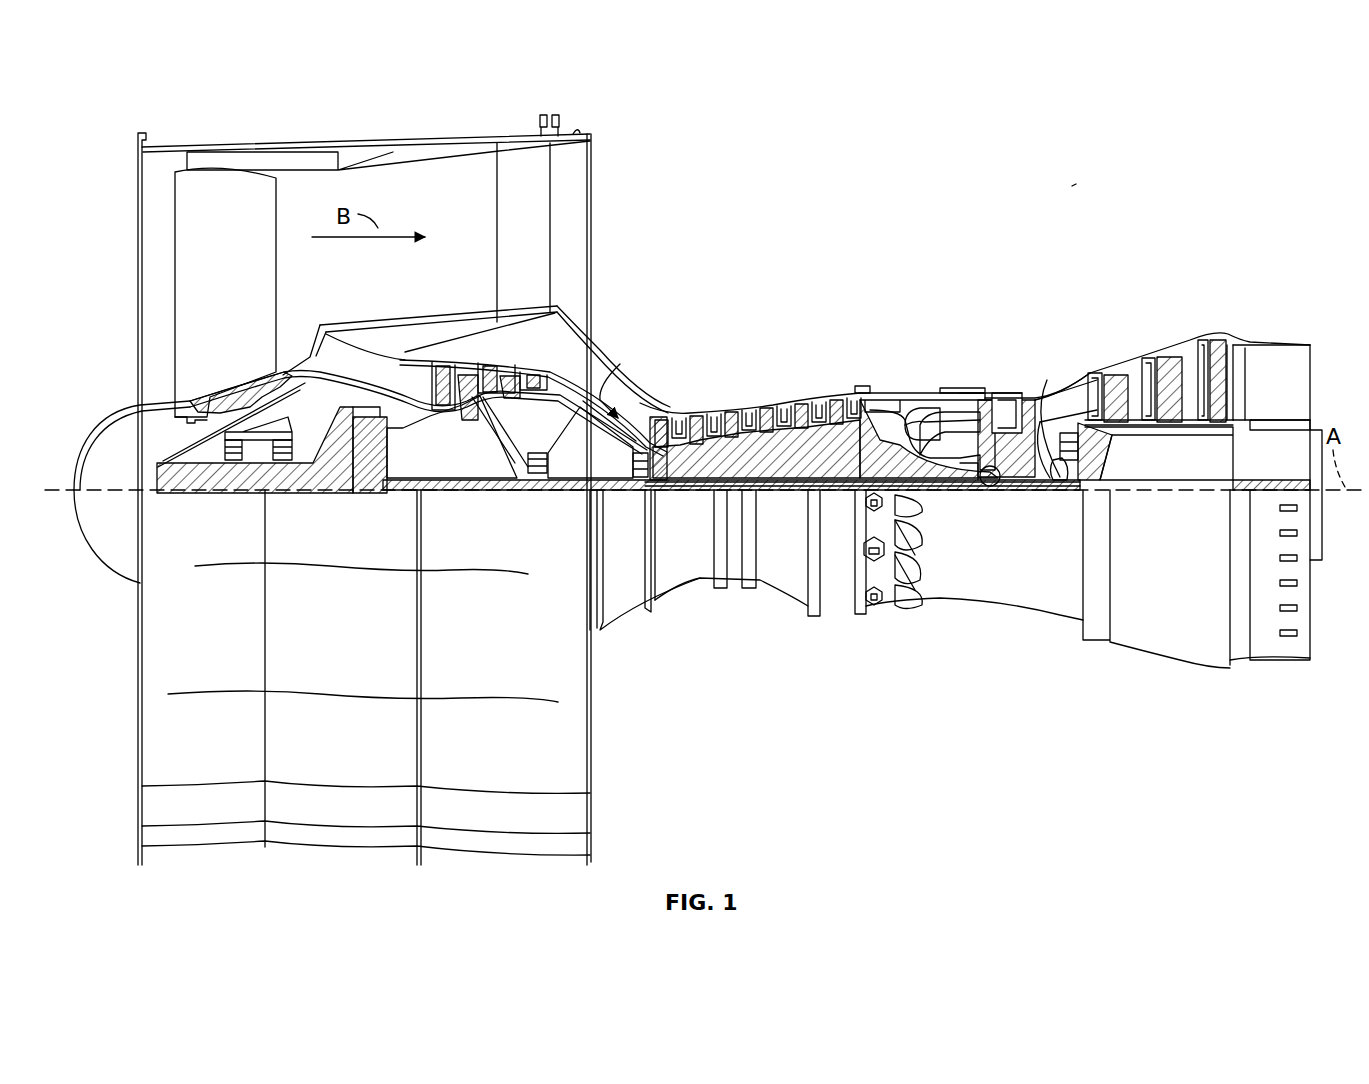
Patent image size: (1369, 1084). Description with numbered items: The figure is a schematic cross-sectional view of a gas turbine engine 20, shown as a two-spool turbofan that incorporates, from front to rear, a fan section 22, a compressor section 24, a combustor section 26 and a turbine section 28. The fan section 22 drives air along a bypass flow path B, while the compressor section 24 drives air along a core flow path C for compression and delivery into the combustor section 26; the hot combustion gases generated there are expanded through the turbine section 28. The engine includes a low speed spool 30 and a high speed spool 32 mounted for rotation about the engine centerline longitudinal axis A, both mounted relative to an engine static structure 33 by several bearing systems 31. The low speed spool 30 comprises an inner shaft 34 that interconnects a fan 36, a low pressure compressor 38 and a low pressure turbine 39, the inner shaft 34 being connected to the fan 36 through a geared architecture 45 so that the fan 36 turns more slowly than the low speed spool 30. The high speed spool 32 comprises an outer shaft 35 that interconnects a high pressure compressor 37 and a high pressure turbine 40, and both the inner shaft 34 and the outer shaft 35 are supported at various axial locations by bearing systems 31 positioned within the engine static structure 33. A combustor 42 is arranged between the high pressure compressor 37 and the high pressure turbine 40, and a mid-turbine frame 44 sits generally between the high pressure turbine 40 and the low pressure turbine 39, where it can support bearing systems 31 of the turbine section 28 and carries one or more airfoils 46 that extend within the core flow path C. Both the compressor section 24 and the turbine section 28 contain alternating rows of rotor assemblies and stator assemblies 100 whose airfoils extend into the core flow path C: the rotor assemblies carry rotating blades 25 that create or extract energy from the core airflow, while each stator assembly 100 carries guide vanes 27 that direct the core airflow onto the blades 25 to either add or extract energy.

The gas turbine engine 20 is at (1073, 189).
The fan section 22 is at (237, 138).
The compressor section 24 is at (645, 388).
The rotating blades 25 is at (440, 378).
The combustor section 26 is at (932, 395).
The guide vanes 27 is at (540, 382).
The turbine section 28 is at (1112, 303).
The low speed spool 30 is at (788, 495).
The bearing systems 31 is at (238, 490).
The high speed spool 32 is at (822, 462).
The engine static structure 33 is at (832, 607).
The inner shaft 34 is at (618, 490).
The outer shaft 35 is at (996, 484).
The fan 36 is at (240, 268).
The high pressure compressor 37 is at (745, 468).
The low pressure compressor 38 is at (500, 372).
The low pressure turbine 39 is at (1166, 390).
The high pressure turbine 40 is at (1000, 410).
The combustor 42 is at (905, 418).
The mid-turbine frame 44 is at (1062, 412).
The geared architecture 45 is at (368, 473).
The airfoils 46 is at (1046, 410).
The stator assemblies 100 is at (462, 426).